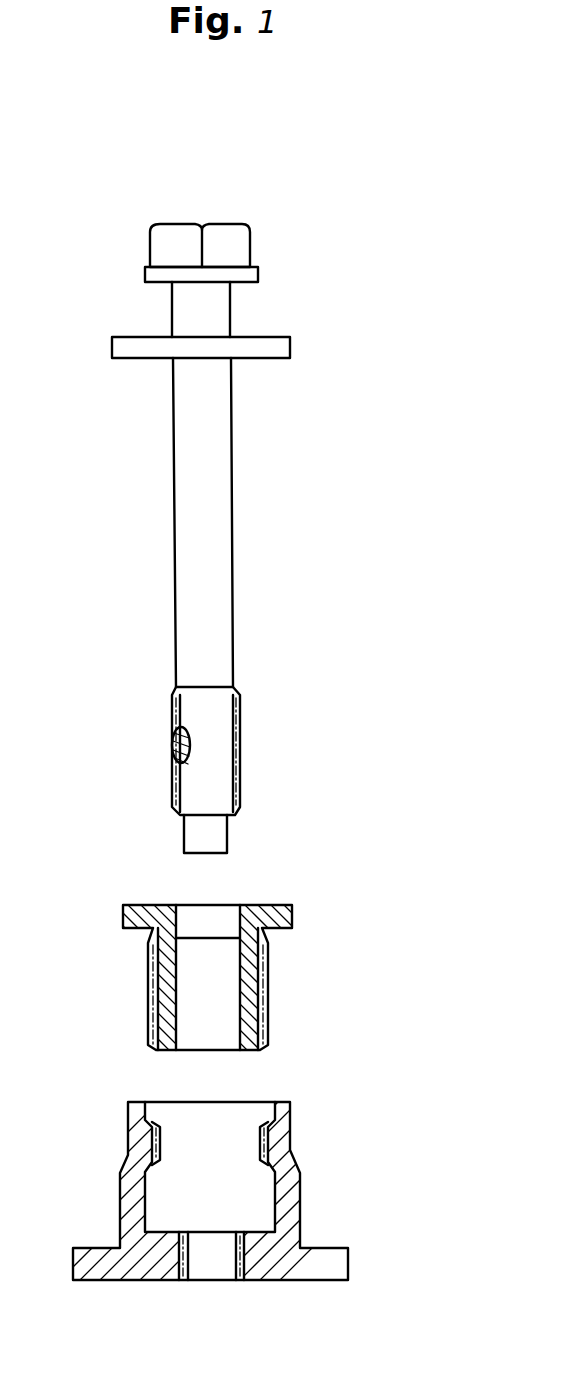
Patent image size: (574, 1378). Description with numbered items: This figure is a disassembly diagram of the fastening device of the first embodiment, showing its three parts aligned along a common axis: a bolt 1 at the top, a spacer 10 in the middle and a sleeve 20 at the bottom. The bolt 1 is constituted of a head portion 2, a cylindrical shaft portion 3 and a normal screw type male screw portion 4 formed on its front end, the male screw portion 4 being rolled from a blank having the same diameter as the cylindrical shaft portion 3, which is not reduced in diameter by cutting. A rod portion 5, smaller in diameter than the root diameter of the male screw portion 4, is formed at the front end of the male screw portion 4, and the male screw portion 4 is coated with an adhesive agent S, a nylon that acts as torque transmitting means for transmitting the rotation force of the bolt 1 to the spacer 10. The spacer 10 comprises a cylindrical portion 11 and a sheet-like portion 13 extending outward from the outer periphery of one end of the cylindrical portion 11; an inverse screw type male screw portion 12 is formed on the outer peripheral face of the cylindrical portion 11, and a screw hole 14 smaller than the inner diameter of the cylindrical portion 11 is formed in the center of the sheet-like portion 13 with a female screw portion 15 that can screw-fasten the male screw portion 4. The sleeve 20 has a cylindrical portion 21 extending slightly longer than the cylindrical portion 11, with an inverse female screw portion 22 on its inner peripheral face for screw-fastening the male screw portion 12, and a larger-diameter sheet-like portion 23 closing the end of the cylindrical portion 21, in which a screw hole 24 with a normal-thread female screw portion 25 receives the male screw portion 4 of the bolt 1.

The bolt 1 is at (207, 538).
The head portion 2 is at (240, 247).
The cylindrical shaft portion 3 is at (212, 447).
The male screw portion 4 is at (240, 740).
The rod portion 5 is at (217, 835).
The adhesive agent S is at (175, 735).
The spacer 10 is at (293, 904).
The cylindrical portion 11 is at (248, 973).
The male screw portion 12 is at (263, 998).
The sheet-like portion 13 is at (138, 903).
The screw hole 14 is at (213, 920).
The female screw portion 15 is at (188, 905).
The sleeve 20 is at (240, 1139).
The cylindrical portion 21 is at (280, 1142).
The female screw portion 22 is at (260, 1140).
The sheet-like portion 23 is at (320, 1267).
The screw hole 24 is at (212, 1260).
The female screw portion 25 is at (235, 1255).